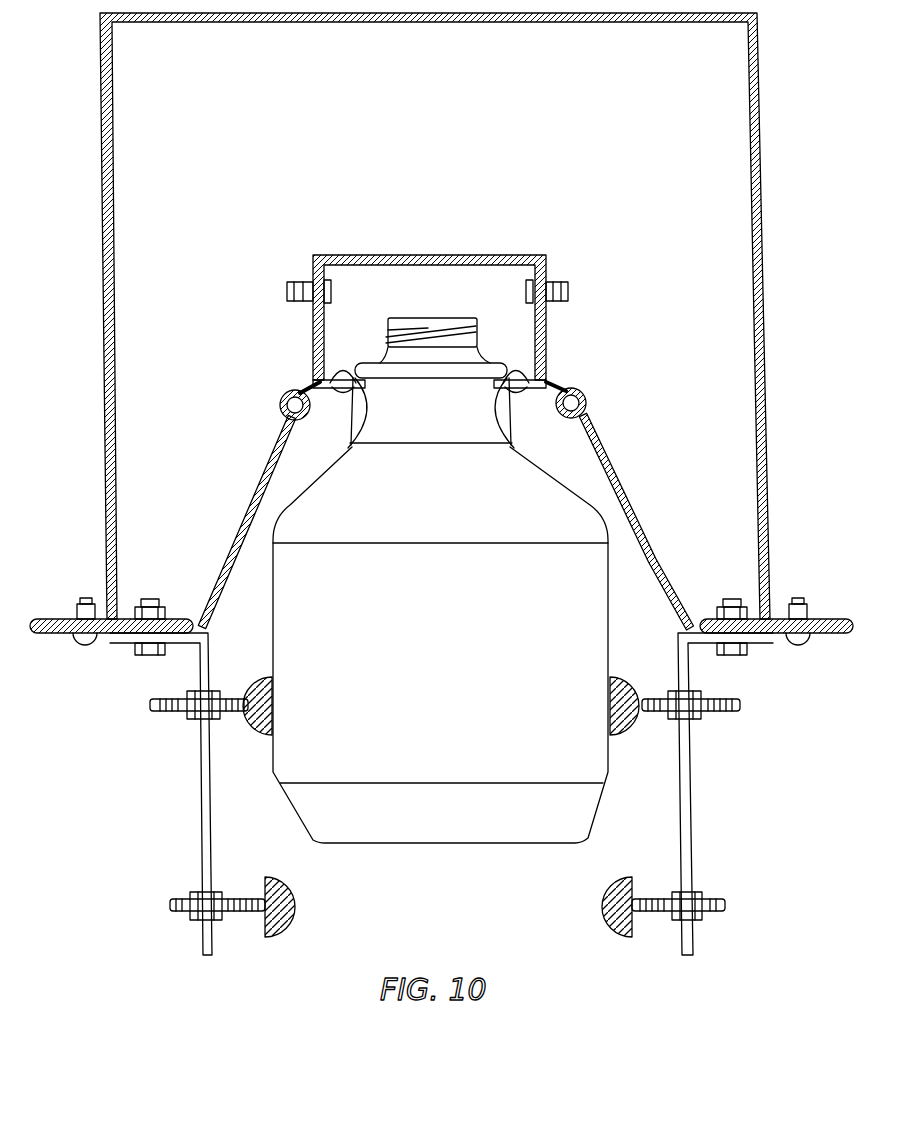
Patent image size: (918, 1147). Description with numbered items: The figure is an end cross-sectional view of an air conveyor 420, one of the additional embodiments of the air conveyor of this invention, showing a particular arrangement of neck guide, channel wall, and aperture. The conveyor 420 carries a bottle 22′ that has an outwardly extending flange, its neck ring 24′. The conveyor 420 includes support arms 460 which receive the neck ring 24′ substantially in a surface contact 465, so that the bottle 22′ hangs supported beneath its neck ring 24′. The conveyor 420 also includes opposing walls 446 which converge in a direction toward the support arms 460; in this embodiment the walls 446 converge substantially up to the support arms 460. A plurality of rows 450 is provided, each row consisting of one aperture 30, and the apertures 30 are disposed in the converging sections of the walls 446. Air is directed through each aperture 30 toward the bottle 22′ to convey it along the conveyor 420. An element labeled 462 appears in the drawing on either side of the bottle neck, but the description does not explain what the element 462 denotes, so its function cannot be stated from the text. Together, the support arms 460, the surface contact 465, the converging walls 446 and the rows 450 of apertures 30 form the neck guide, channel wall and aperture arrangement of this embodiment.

The air conveyor 420 is at (765, 200).
The rows 450 is at (602, 420).
The surface contact 465 is at (518, 366).
The opposing walls 446 is at (256, 484).
The aperture 30 is at (306, 418).
The support arms 460 is at (316, 380).
The neck ring 24′ is at (431, 370).
The neck gasket 462 is at (347, 442).
The bottle 22′ is at (428, 617).